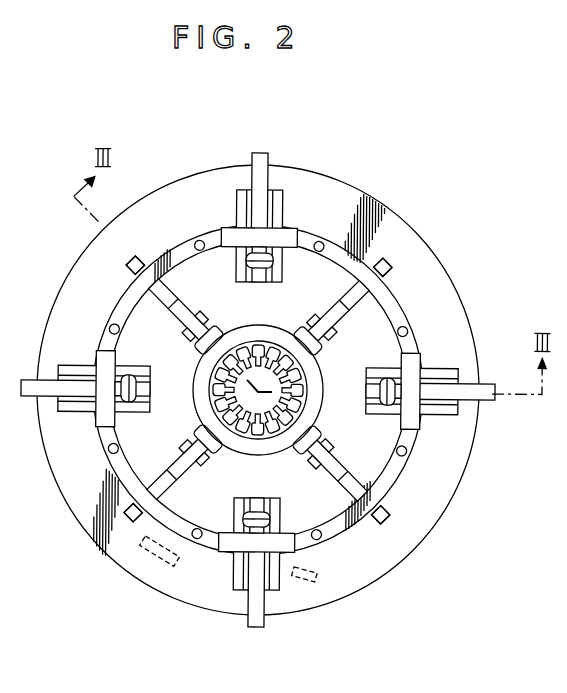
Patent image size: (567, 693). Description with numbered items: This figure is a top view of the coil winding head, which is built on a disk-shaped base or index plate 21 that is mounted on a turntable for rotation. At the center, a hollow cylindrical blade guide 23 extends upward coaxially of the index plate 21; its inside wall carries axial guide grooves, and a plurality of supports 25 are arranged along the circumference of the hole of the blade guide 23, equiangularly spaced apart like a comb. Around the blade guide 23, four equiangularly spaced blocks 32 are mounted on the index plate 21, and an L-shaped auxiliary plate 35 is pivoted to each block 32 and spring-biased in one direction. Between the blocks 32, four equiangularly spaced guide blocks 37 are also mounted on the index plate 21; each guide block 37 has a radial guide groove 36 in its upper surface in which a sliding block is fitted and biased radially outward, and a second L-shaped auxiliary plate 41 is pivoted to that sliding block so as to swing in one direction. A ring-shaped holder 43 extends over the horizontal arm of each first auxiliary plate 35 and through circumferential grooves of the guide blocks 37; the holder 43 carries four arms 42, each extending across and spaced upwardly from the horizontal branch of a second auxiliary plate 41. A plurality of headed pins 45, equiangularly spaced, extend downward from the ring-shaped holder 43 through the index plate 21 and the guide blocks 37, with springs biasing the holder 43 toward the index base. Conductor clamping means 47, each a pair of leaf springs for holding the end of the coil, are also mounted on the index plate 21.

The base or index plate 21 is at (424, 537).
The blade guide 23 is at (315, 371).
The supports 25 is at (306, 406).
The blocks 32 is at (205, 321).
The L-shaped auxiliary plate 35 is at (199, 347).
The radial guide groove 36 is at (258, 281).
The guide blocks 37 is at (281, 204).
The second auxiliary plate 41 is at (272, 263).
The arms 42 is at (230, 232).
The ring-shaped holder 43 is at (390, 301).
The pins 45 is at (407, 452).
The conductor clamping means 47 is at (178, 565).